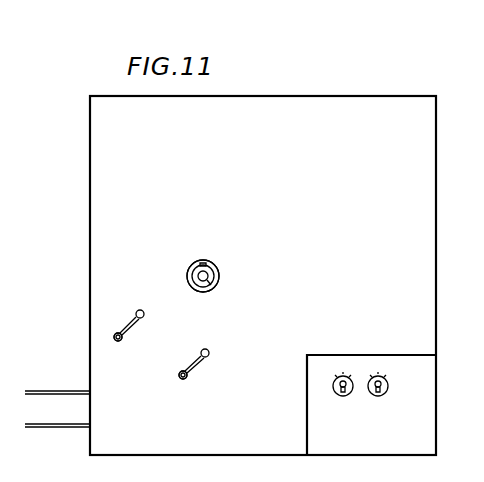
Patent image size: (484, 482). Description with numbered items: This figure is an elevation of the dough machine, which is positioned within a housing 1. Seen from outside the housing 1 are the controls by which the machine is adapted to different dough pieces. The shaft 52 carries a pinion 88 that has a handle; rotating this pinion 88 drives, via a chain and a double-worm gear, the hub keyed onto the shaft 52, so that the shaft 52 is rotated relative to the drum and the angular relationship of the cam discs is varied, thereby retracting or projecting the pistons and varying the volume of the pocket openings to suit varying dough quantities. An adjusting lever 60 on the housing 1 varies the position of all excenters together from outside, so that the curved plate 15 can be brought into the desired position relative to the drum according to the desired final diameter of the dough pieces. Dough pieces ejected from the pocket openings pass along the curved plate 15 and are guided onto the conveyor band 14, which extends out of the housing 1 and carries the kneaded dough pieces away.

The housing 1 is at (88, 146).
The conveyor band 14 is at (40, 391).
The shaft 52 is at (189, 270).
The pinion 88 is at (220, 274).
The adjusting lever 60 is at (128, 322).
The curved plate 15 is at (119, 341).